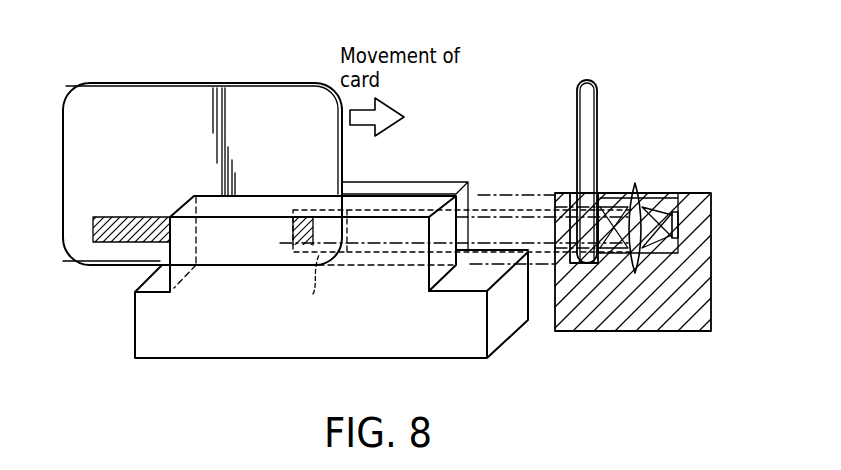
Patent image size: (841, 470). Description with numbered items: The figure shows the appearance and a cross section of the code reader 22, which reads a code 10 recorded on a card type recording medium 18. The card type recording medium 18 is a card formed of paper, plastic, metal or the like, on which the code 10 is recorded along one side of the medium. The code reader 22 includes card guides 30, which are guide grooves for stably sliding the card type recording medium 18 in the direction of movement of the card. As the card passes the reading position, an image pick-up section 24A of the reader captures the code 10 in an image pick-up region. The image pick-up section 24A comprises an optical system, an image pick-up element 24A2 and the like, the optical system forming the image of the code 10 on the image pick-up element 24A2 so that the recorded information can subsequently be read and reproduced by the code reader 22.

The card type recording medium 18 is at (140, 97).
The code 10 is at (128, 217).
The card guides 30 is at (383, 202).
The code reader 22 is at (207, 358).
The image pick-up section 24A is at (637, 185).
The image pick-up element 24A2 is at (678, 227).